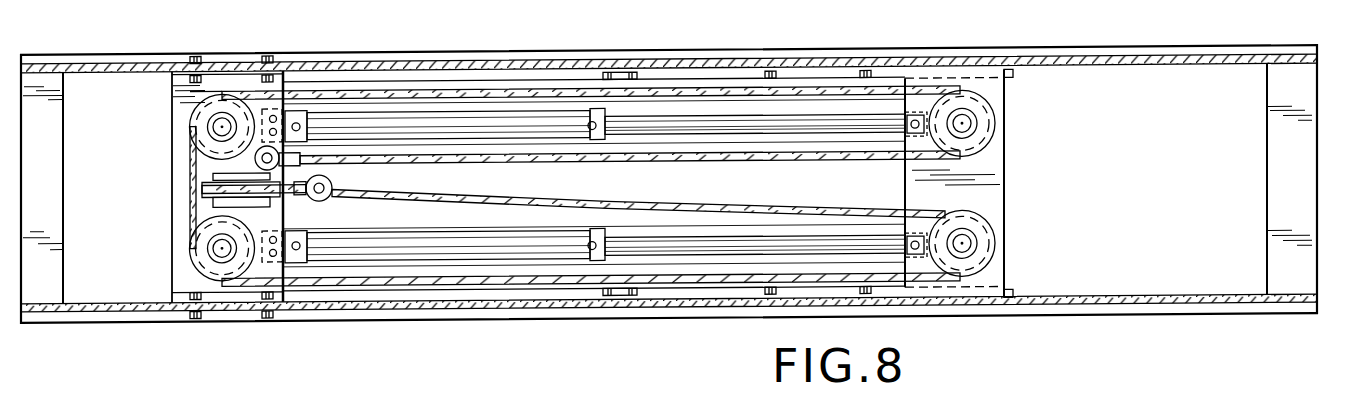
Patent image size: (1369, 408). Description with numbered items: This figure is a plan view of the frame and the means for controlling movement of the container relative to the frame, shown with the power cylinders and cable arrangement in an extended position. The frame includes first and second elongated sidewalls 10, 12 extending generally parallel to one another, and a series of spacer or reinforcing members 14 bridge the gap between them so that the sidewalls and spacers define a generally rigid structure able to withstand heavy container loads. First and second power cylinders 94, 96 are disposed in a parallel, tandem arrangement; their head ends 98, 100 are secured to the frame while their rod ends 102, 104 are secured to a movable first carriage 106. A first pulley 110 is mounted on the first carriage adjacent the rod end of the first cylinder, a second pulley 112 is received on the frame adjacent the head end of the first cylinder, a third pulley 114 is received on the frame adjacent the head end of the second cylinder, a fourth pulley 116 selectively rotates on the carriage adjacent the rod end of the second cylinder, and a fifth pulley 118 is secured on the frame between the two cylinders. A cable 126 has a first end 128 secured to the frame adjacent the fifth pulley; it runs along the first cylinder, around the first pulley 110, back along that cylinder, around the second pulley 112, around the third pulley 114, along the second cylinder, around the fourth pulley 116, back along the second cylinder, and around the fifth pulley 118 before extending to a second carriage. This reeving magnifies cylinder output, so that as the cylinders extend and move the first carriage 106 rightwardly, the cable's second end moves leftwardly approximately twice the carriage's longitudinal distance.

The first elongated sidewall 10 is at (1122, 311).
The second elongated sidewall 12 is at (1108, 63).
The spacer or reinforcing member 14 is at (52, 123).
The first power cylinder 94 is at (553, 124).
The second power cylinder 96 is at (427, 246).
The head end of first cylinder 98 is at (297, 124).
The head end of second cylinder 100 is at (300, 240).
The rod end of first cylinder 102 is at (882, 127).
The rod end of second cylinder 104 is at (797, 251).
The first carriage 106 is at (980, 179).
The first pulley 110 is at (980, 130).
The second pulley 112 is at (207, 112).
The third pulley 114 is at (205, 255).
The fourth pulley 116 is at (980, 237).
The fifth pulley 118 is at (208, 185).
The cable 126 is at (290, 185).
The first end of cable 128 is at (295, 160).